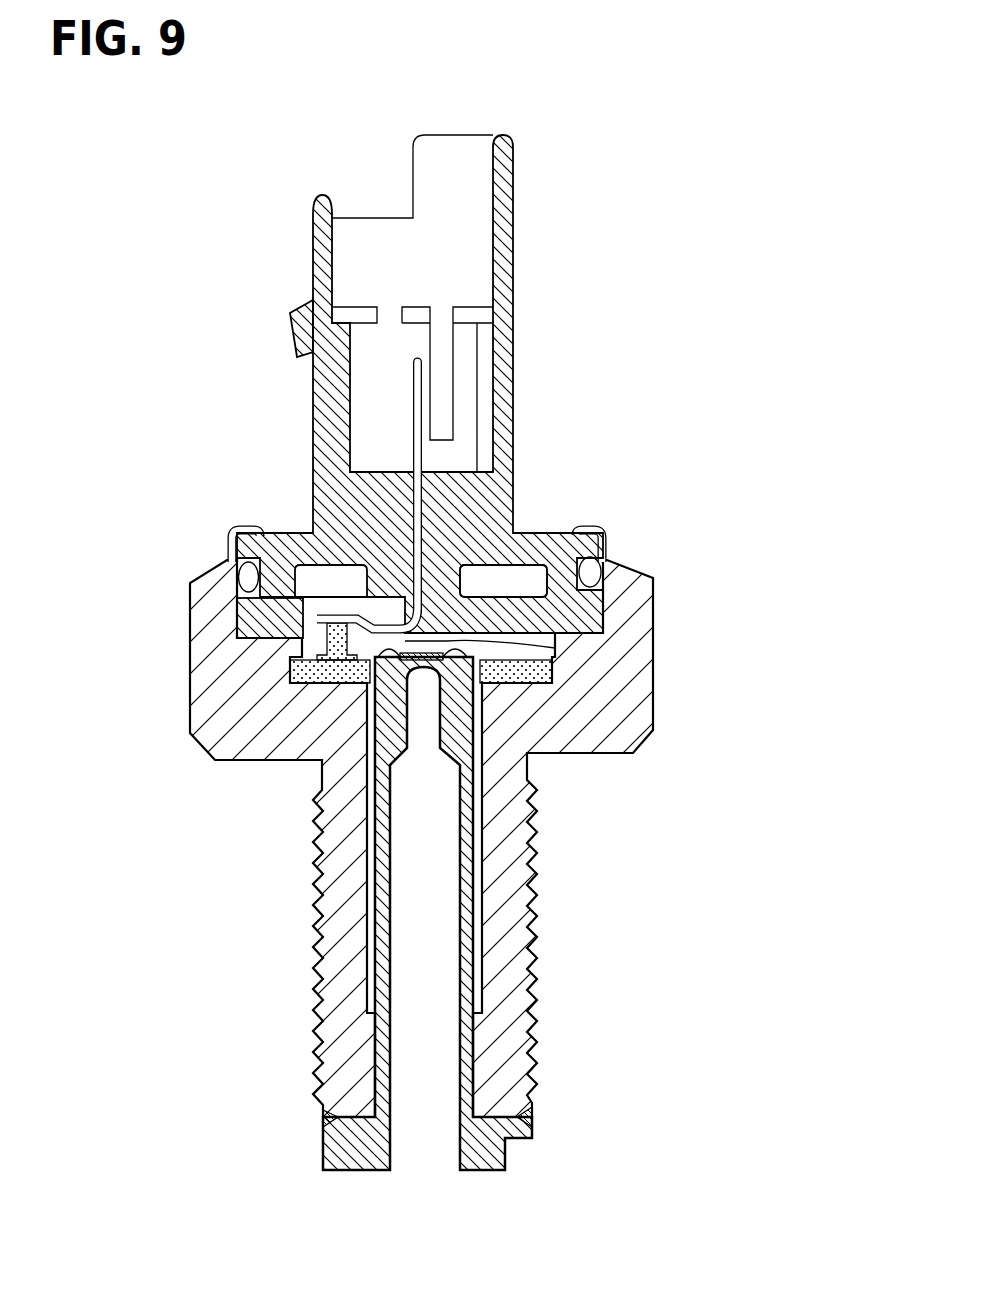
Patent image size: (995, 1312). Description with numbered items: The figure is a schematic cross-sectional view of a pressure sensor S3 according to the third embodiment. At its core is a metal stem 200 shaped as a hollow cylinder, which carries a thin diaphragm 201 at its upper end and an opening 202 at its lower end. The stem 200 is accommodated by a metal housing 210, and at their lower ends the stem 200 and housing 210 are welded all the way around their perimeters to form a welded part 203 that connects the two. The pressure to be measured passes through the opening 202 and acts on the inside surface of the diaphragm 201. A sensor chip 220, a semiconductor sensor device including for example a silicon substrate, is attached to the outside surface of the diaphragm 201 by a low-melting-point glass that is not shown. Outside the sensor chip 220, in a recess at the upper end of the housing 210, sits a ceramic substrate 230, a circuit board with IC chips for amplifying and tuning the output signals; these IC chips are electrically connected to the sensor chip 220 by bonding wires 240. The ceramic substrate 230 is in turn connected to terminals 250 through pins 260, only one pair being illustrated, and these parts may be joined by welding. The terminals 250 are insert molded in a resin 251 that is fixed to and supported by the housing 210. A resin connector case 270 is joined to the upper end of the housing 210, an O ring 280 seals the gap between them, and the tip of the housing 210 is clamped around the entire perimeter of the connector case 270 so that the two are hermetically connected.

The pressure sensor S3 is at (606, 205).
The metal stem 200 is at (365, 748).
The diaphragm 201 is at (393, 737).
The opening 202 is at (392, 1172).
The welded part 203 is at (323, 1120).
The metal housing 210 is at (603, 757).
The sensor chip 220 is at (545, 637).
The ceramic substrate 230 is at (400, 657).
The bonding wires 240 is at (292, 665).
The terminals 250 is at (413, 395).
The resin 251 is at (448, 585).
The pins 260 is at (312, 625).
The connector case 270 is at (512, 352).
The O ring 280 is at (597, 563).